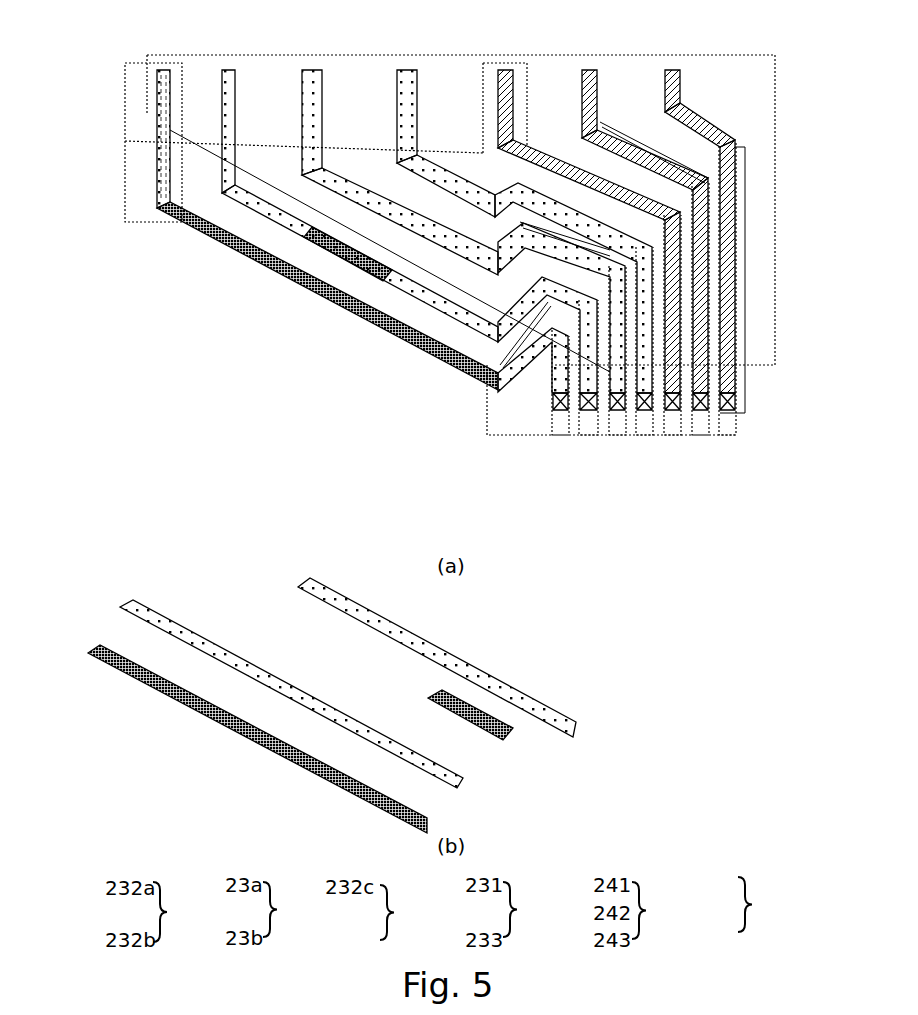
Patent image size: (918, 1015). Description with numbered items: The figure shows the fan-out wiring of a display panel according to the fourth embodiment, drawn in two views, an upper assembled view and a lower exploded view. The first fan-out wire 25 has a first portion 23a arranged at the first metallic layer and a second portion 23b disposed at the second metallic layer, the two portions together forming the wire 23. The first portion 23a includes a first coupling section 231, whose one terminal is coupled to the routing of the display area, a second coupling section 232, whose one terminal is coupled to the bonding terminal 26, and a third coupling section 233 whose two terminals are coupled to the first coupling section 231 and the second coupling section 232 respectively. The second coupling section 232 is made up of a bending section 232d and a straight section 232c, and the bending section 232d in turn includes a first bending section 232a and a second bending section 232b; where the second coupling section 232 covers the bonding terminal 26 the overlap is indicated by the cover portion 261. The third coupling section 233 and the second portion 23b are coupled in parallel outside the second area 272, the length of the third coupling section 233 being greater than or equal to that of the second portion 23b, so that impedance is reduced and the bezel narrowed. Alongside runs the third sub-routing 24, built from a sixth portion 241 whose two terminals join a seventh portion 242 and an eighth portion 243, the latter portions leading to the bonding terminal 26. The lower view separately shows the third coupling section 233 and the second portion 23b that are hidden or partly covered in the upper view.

The second area 272 is at (778, 56).
The first coupling section 231 is at (125, 222).
The eighth portion 243 is at (125, 141).
The first portion 23a is at (163, 173).
The second portion 23b is at (213, 243).
The first bending section 232a is at (548, 437).
The second bending section 232b is at (630, 400).
The straight section 232c is at (577, 413).
The bending section 232d is at (273, 923).
The cover portion 261 is at (590, 413).
The bonding terminal 26 is at (617, 425).
The sixth portion 241 is at (688, 193).
The seventh portion 242 is at (742, 413).
The third coupling section 233 is at (197, 637).
The first fan-out wire 23 is at (510, 895).
The second coupling section 232 is at (450, 912).
The third sub-routing 24 is at (696, 920).
The first fan-out wire 25 is at (774, 910).